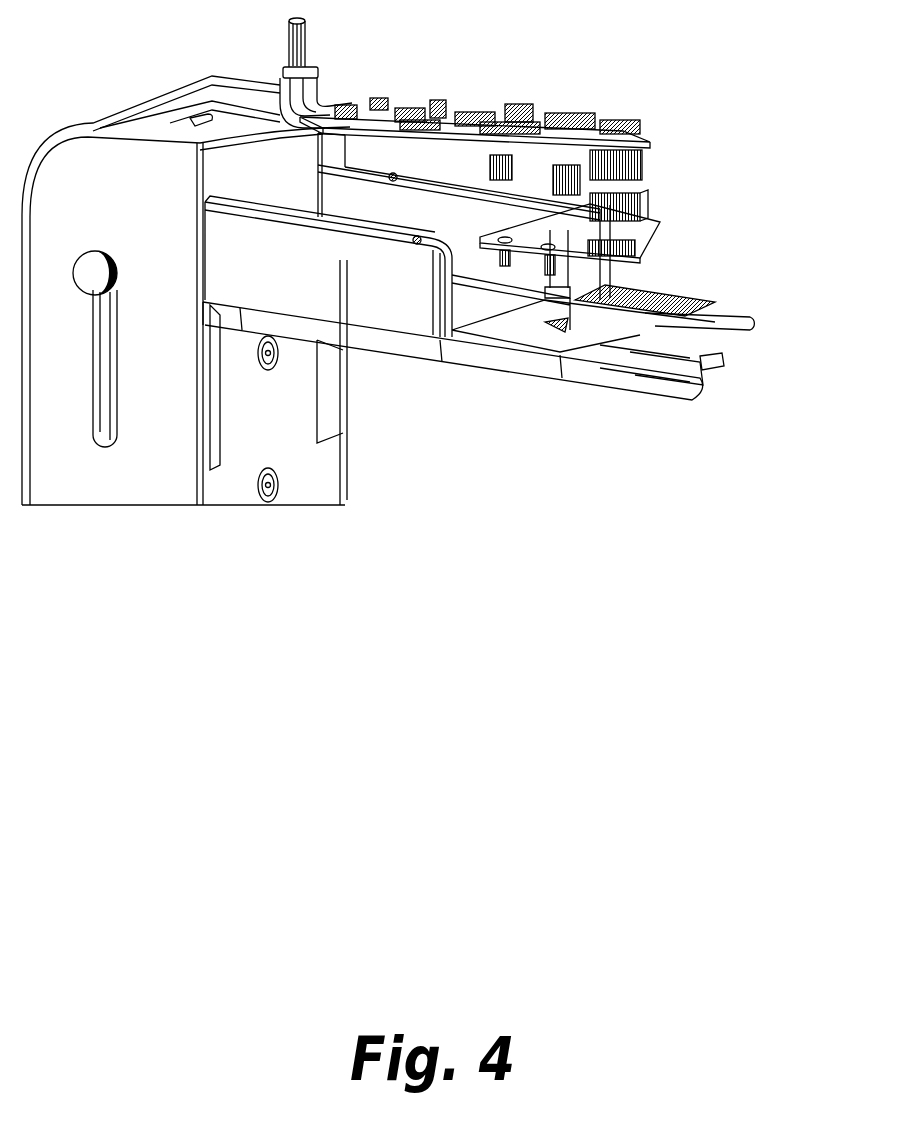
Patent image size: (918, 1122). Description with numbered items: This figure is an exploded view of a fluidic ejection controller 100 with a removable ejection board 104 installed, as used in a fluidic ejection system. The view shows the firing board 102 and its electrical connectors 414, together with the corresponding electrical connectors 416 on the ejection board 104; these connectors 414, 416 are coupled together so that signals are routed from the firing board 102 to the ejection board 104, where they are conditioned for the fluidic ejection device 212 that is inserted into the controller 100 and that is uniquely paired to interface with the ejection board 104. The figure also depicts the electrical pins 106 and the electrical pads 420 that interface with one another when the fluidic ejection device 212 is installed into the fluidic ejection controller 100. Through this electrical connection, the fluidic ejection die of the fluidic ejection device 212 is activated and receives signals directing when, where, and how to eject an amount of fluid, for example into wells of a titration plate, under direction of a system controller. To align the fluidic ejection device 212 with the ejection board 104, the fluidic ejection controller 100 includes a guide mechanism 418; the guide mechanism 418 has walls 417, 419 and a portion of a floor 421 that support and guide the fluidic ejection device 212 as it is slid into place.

The fluidic ejection controller 100 is at (658, 96).
The firing board 102 is at (595, 132).
The ejection board 104 is at (637, 238).
The electrical pins 106 is at (603, 253).
The fluidic ejection device 212 is at (723, 327).
The electrical connectors 414 is at (640, 167).
The electrical connectors 416 is at (640, 207).
The wall 417 is at (622, 367).
The guide mechanism 418 is at (640, 373).
The wall 419 is at (710, 363).
The electrical pads 420 is at (580, 303).
The floor 421 is at (557, 327).